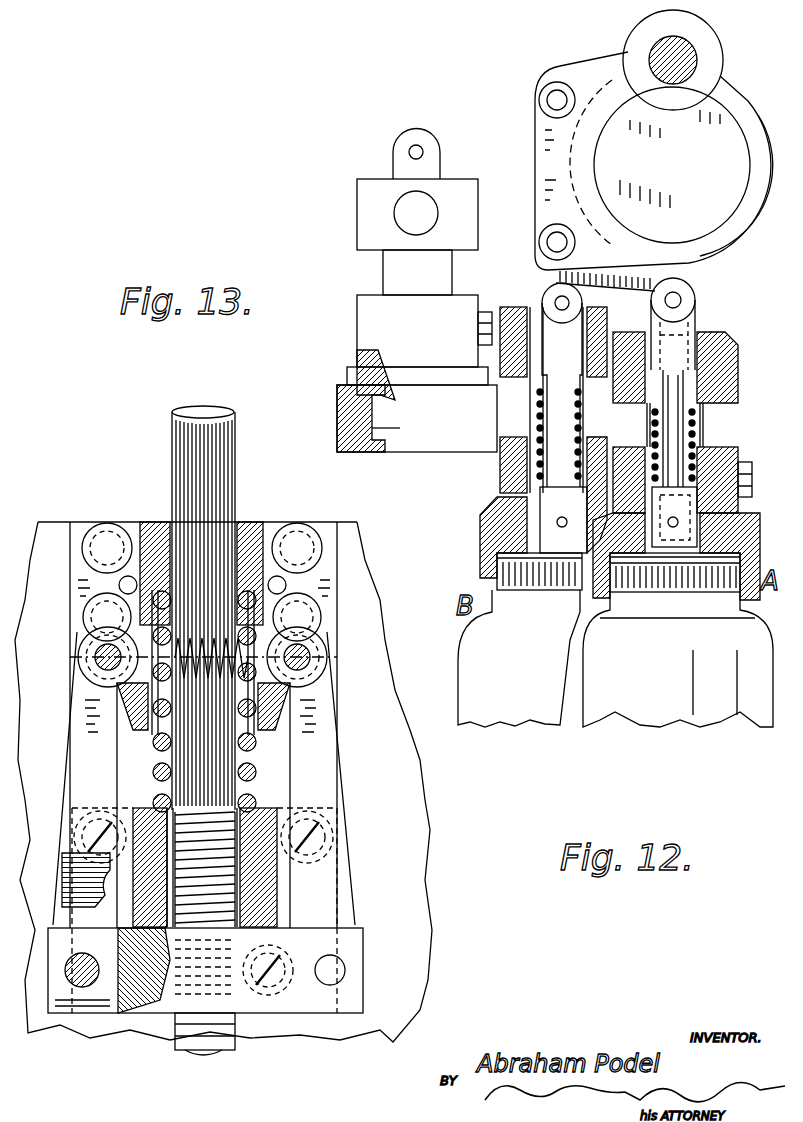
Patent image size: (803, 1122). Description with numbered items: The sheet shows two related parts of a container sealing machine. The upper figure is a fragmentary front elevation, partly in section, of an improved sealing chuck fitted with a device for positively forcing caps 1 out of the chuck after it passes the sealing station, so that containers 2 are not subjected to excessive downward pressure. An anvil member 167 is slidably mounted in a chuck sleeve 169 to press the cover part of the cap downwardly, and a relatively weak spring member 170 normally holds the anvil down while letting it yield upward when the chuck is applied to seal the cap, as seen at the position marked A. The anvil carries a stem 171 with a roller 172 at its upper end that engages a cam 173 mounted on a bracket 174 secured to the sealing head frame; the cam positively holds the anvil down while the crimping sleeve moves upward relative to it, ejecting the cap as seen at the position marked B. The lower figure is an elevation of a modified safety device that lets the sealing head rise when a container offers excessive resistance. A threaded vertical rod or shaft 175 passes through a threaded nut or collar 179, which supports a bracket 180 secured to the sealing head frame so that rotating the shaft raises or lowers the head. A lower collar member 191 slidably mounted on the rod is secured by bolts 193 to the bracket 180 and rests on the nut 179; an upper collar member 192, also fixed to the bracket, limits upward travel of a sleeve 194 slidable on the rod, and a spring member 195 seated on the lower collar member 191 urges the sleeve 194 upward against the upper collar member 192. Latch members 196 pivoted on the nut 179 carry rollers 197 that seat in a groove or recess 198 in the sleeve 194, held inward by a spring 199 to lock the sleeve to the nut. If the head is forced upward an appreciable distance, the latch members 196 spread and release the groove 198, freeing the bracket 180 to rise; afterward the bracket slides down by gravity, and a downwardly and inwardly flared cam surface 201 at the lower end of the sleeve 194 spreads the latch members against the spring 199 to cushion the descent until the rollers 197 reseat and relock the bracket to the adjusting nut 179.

In FIG. 12, the cap 1 is at (567, 574).
In FIG. 12, the bottle 2 is at (615, 658).
In FIG. 12, the anvil member 167 is at (392, 436).
In FIG. 12, the chuck sleeve 169 is at (392, 282).
In FIG. 12, the spring member 170 is at (577, 400).
In FIG. 12, the stem 171 is at (678, 384).
In FIG. 12, the roller 172 is at (693, 289).
In FIG. 12, the cam 173 is at (621, 276).
In FIG. 12, the bracket 174 is at (545, 124).
In FIG. 13, the threaded vertical rod or shaft 175 is at (228, 445).
In FIG. 13, the threaded nut or collar 179 is at (293, 993).
In FIG. 13, the bracket 180 is at (430, 787).
In FIG. 13, the lower collar member 191 is at (265, 893).
In FIG. 13, the upper collar member 192 is at (248, 528).
In FIG. 13, the bolts 193 is at (125, 840).
In FIG. 13, the sleeve 194 is at (290, 708).
In FIG. 13, the spring member 195 is at (253, 758).
In FIG. 13, the latch members 196 is at (83, 737).
In FIG. 13, the rollers 197 is at (107, 620).
In FIG. 13, the groove or recess 198 is at (120, 677).
In FIG. 13, the spring 199 is at (211, 676).
In FIG. 13, the cam surface 201 is at (145, 701).